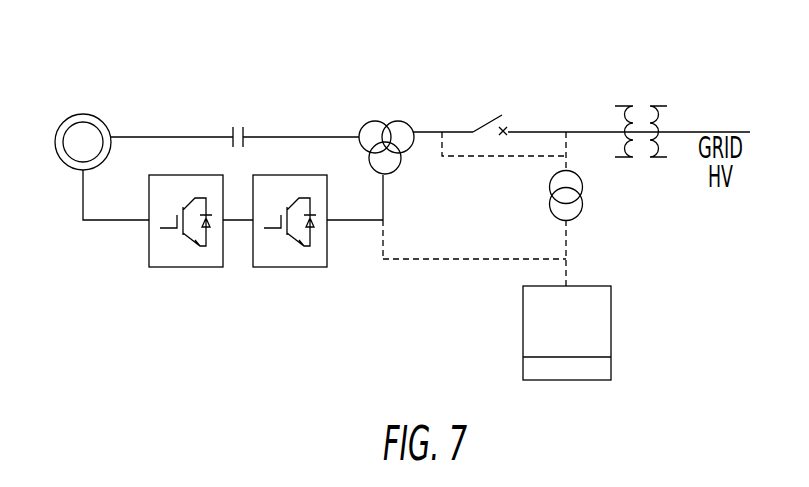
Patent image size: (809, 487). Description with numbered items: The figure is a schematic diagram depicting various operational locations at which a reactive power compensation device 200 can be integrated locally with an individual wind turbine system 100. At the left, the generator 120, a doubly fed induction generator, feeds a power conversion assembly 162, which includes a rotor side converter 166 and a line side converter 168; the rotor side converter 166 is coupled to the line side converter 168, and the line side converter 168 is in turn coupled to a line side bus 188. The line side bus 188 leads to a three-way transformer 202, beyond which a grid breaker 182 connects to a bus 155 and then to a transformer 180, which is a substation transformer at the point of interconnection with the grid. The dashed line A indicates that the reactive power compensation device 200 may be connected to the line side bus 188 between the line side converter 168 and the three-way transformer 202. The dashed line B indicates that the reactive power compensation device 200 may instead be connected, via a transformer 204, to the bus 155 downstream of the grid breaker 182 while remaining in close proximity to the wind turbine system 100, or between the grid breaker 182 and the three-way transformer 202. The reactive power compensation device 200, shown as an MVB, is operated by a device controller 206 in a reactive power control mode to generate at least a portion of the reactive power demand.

The wind turbine system 100 is at (303, 50).
The generator 120 is at (83, 113).
The power conversion assembly 162 is at (237, 253).
The rotor side converter 166 is at (165, 267).
The line side converter 168 is at (308, 267).
The three-way transformer 202 is at (372, 121).
The line side bus 188 is at (384, 188).
The grid breaker 182 is at (502, 115).
The bus 155 is at (576, 132).
The transformer 180 is at (650, 105).
The transformer 204 is at (580, 193).
The reactive power compensation device 200 is at (595, 353).
The device controller 206 is at (578, 380).
The dashed line A is at (445, 259).
The dashed line B is at (563, 249).